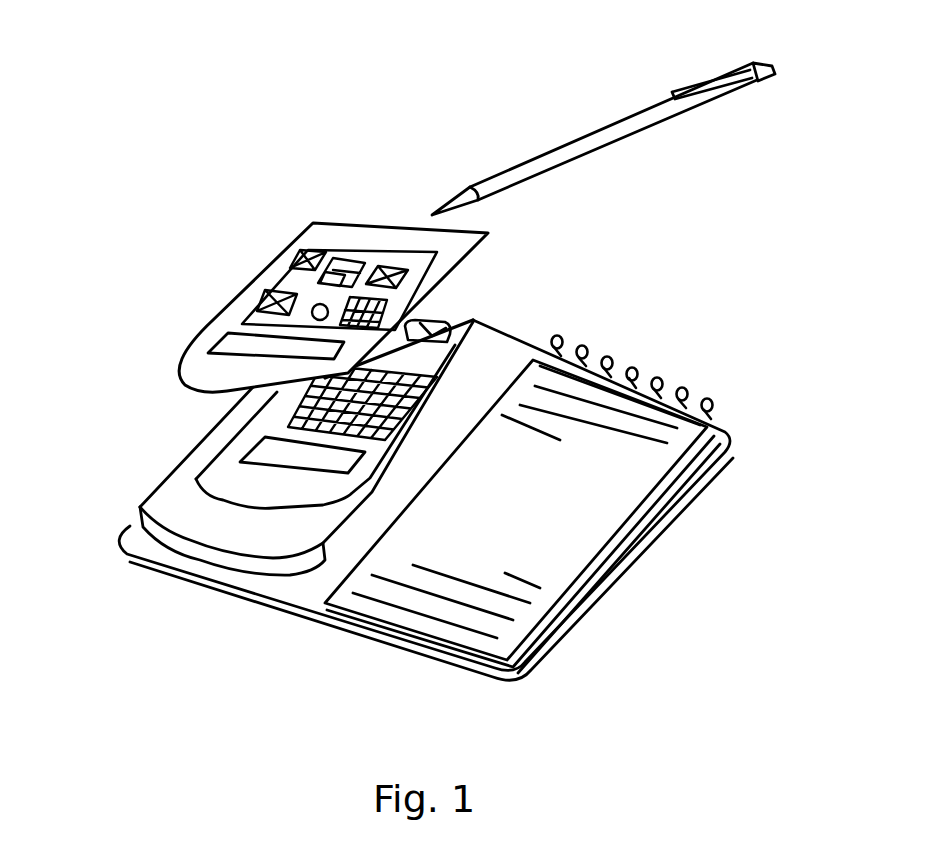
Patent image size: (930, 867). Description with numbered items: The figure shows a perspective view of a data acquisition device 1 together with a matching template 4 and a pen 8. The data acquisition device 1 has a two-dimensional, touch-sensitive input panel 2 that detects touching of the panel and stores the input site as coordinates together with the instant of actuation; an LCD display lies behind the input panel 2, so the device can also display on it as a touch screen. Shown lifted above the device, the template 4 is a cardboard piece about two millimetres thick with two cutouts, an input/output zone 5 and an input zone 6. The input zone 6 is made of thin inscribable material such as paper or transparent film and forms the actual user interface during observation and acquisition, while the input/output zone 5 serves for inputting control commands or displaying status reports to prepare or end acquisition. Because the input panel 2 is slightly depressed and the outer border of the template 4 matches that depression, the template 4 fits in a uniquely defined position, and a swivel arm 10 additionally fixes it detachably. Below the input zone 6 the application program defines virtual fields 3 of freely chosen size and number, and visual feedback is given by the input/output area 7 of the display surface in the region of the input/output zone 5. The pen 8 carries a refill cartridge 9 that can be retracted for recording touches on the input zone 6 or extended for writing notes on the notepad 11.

The data acquisition device 1 is at (183, 508).
The touch-sensitive input panel 2 is at (245, 485).
The fields 3 is at (285, 427).
The template 4 is at (230, 372).
The input/output zone 5 is at (222, 332).
The input zone 6 is at (310, 280).
The input/output area 7 is at (323, 455).
The pen 8 is at (733, 85).
The refill cartridge 9 is at (440, 214).
The swivel arm 10 is at (452, 330).
The notepad 11 is at (540, 497).